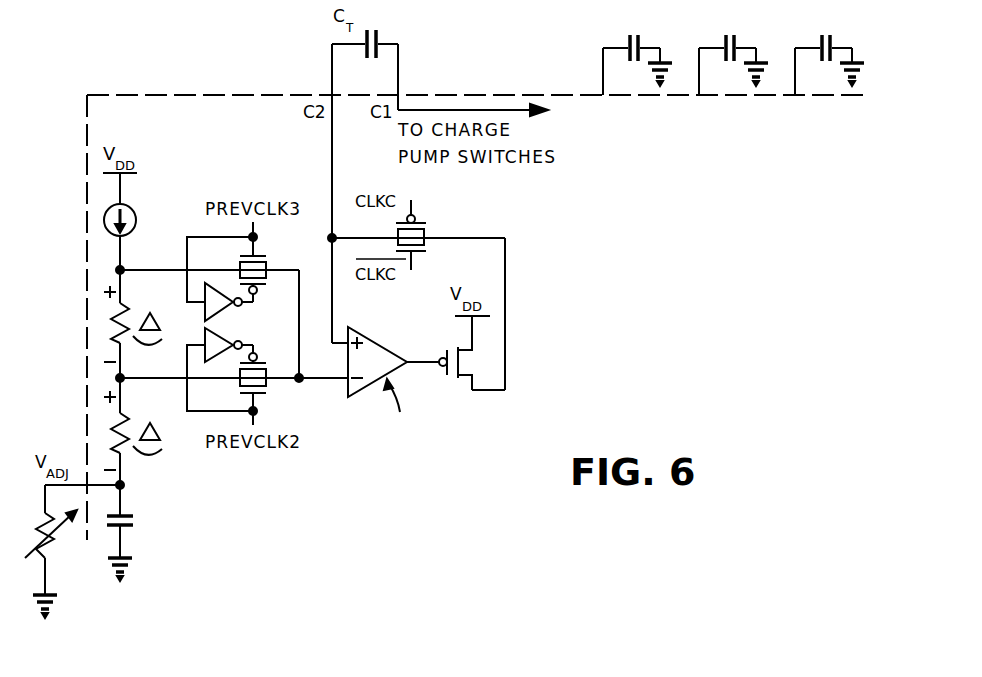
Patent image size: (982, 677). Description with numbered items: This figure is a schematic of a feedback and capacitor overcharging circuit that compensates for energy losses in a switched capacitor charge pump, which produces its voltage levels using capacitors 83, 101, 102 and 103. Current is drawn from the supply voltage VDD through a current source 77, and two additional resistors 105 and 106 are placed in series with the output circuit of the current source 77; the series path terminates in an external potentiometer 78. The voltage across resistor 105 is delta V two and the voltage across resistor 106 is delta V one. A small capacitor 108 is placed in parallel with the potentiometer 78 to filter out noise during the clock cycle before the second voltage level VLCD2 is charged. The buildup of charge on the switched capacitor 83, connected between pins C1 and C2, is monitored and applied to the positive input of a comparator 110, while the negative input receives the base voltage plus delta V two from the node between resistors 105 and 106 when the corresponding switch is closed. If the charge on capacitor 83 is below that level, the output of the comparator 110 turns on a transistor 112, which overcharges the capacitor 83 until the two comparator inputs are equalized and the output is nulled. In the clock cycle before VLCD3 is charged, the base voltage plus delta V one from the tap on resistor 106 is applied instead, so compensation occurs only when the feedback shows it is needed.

The current source 77 is at (134, 209).
The external potentiometer 78 is at (55, 551).
The switched capacitor 83 is at (379, 40).
The capacitor 101 is at (628, 41).
The capacitor 102 is at (724, 41).
The capacitor 103 is at (820, 41).
The resistor 105 is at (117, 323).
The resistor 106 is at (117, 418).
The small capacitor 108 is at (126, 515).
The comparator 110 is at (392, 352).
The transistor 112 is at (466, 366).